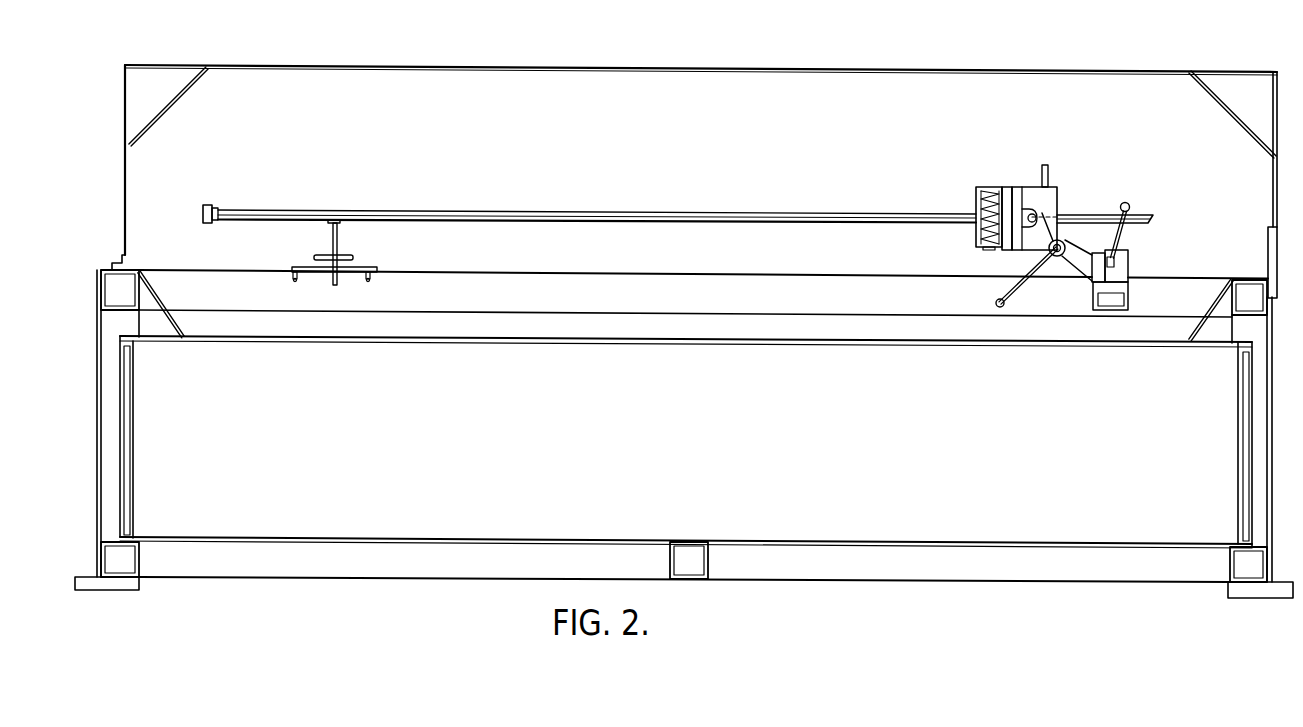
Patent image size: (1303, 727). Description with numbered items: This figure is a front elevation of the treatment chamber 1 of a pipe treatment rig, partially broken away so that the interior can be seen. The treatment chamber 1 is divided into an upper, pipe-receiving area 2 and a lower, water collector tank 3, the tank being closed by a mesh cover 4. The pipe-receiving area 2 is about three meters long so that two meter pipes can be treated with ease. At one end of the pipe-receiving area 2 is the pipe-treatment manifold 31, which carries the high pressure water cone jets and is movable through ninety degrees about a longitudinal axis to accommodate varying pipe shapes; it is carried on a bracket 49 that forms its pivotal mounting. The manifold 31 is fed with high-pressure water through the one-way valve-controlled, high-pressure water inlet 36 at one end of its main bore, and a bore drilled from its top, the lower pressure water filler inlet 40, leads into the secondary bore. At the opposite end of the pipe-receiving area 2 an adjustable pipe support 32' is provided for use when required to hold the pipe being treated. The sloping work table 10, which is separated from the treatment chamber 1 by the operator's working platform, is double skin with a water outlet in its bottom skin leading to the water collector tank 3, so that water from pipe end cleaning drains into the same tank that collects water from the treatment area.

The treatment chamber 1 is at (819, 71).
The pipe-receiving area 2 is at (608, 188).
The water collector tank 3 is at (580, 423).
The mesh cover 4 is at (701, 343).
The sloping work table 10 is at (939, 187).
The pipe-treatment manifold 31 is at (1016, 158).
The adjustable pipe support 32' is at (350, 252).
The high-pressure water inlet 36 is at (1085, 213).
The lower pressure water filler inlet 40 is at (1047, 176).
The bracket 49 is at (1042, 244).